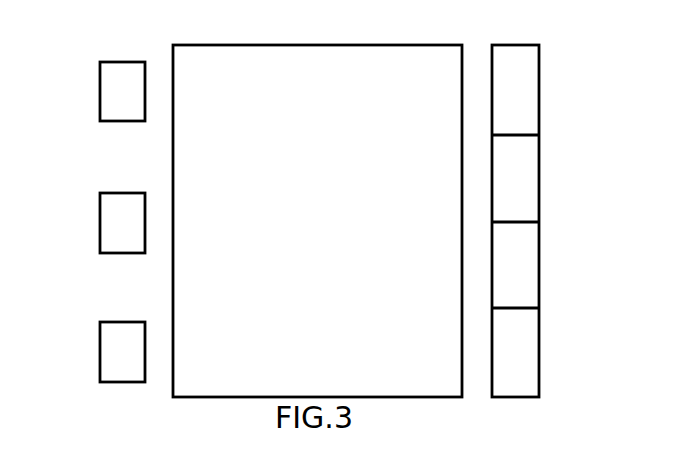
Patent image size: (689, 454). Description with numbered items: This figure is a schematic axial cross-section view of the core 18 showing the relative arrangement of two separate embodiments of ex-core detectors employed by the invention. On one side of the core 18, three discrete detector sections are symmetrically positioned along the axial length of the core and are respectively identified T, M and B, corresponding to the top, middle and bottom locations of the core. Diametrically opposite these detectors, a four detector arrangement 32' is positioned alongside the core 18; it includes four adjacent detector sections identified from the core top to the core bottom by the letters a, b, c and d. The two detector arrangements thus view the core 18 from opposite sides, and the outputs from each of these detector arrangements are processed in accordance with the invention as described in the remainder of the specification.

The core 18 is at (330, 238).
The four detector arrangement 32' is at (544, 221).